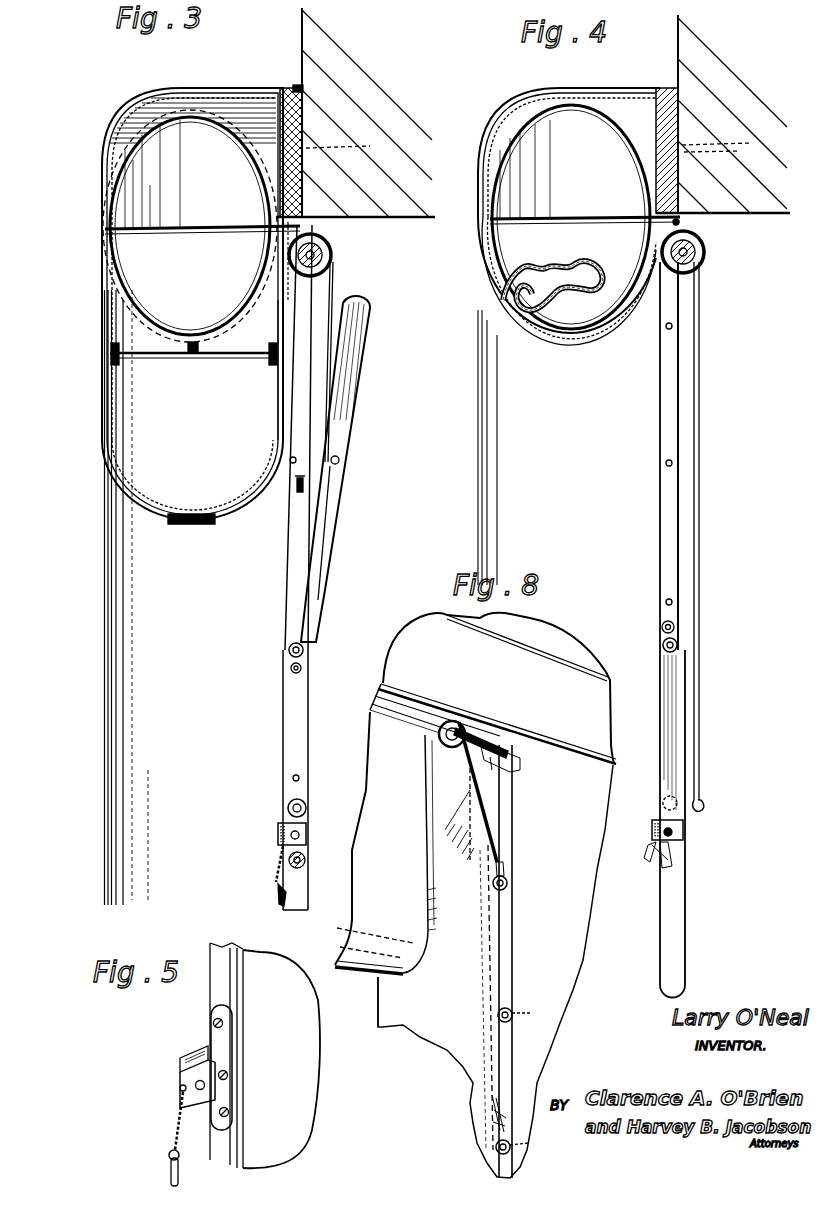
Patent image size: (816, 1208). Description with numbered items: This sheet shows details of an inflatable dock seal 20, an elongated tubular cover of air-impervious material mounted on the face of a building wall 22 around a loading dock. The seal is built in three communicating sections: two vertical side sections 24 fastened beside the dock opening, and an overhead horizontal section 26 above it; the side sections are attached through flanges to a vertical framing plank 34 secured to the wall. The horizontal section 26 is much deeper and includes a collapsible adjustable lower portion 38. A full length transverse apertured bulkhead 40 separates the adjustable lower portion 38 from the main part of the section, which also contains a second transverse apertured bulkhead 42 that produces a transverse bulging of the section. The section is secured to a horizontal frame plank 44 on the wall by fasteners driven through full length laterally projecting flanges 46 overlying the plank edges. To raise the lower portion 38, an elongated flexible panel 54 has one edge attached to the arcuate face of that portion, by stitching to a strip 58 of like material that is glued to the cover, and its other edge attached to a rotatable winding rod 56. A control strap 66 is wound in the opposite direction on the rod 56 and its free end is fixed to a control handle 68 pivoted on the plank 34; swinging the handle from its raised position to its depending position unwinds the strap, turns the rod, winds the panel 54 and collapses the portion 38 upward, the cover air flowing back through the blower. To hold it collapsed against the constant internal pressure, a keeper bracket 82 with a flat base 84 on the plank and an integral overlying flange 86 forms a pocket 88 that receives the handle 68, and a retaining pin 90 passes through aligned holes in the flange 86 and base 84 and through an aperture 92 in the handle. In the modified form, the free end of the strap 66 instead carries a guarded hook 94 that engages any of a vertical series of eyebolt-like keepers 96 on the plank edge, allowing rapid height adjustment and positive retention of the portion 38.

In FIG. 3, the dock seal 20 is at (98, 151).
In FIG. 8, the dock seal 20 is at (366, 982).
In FIG. 3, the building wall 22 is at (316, 42).
In FIG. 3, the vertical side sections 24 is at (118, 627).
In FIG. 3, the overhead horizontal section 26 is at (90, 285).
In FIG. 5, the framing plank 34 is at (275, 983).
In FIG. 3, the adjustable lower portion 38 is at (107, 450).
In FIG. 3, the apertured bulkhead 40 is at (159, 355).
In FIG. 4, the apertured bulkhead 40 is at (580, 258).
In FIG. 3, the second transverse apertured bulkhead 42 is at (212, 227).
In FIG. 4, the second transverse apertured bulkhead 42 is at (584, 216).
In FIG. 3, the horizontal frame plank 44 is at (295, 142).
In FIG. 4, the horizontal frame plank 44 is at (668, 88).
In FIG. 3, the laterally projecting flanges 46 is at (300, 88).
In FIG. 4, the laterally projecting flanges 46 is at (680, 214).
In FIG. 3, the flexible panel 54 is at (266, 479).
In FIG. 4, the flexible panel 54 is at (700, 233).
In FIG. 8, the flexible panel 54 is at (385, 762).
In FIG. 3, the winding rod 56 is at (331, 252).
In FIG. 3, the strip 58 is at (179, 513).
In FIG. 8, the strip 58 is at (384, 965).
In FIG. 3, the control strap 66 is at (336, 298).
In FIG. 4, the control strap 66 is at (698, 565).
In FIG. 8, the control strap 66 is at (494, 812).
In FIG. 3, the control handle 68 is at (355, 436).
In FIG. 4, the control handle 68 is at (690, 920).
In FIG. 3, the keeper bracket 82 is at (276, 824).
In FIG. 4, the keeper bracket 82 is at (689, 840).
In FIG. 5, the keeper bracket 82 is at (191, 1044).
In FIG. 3, the flat base 84 is at (306, 810).
In FIG. 5, the flat base 84 is at (234, 1058).
In FIG. 5, the overlying flange 86 is at (207, 1094).
In FIG. 5, the pocket 88 is at (182, 1070).
In FIG. 3, the retaining pin 90 is at (278, 895).
In FIG. 4, the retaining pin 90 is at (674, 831).
In FIG. 5, the retaining pin 90 is at (167, 1178).
In FIG. 3, the aperture 92 is at (341, 461).
In FIG. 8, the guarded hook 94 is at (495, 1132).
In FIG. 8, the keepers 96 is at (509, 877).